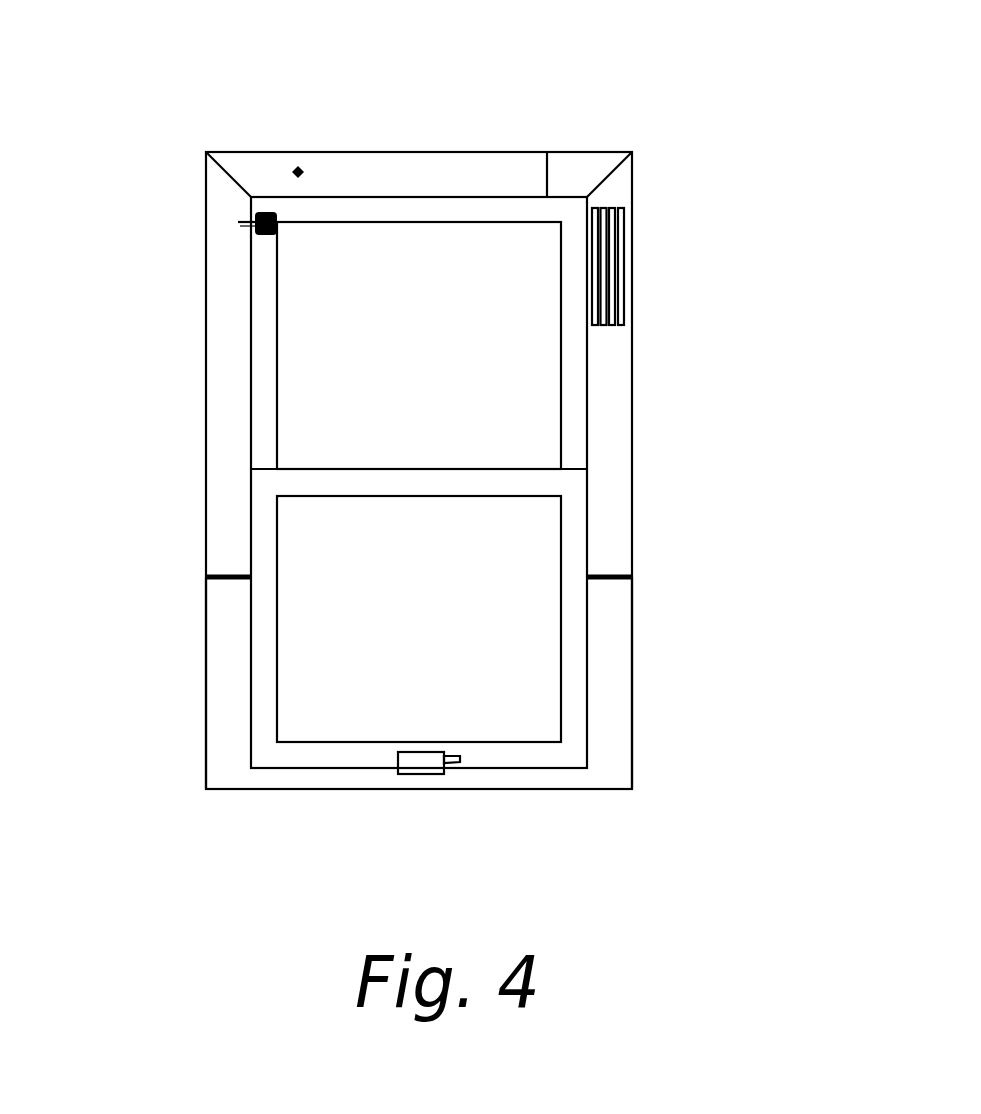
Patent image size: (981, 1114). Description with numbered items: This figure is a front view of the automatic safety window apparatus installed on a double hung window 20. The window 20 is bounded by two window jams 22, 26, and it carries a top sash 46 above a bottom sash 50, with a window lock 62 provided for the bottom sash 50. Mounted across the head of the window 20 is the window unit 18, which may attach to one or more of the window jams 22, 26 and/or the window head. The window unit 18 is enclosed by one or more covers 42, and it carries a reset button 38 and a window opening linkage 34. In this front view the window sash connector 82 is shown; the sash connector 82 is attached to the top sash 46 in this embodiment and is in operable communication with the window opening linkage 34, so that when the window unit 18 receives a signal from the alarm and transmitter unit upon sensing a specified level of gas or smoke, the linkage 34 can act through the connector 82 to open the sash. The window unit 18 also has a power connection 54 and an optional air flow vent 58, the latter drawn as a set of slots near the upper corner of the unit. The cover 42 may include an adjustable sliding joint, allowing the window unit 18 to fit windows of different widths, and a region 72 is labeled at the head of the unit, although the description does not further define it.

The window unit 18 is at (422, 395).
The window 20 is at (343, 762).
The window jam 22 is at (147, 683).
The window jam 26 is at (688, 683).
The window opening linkage 34 is at (173, 190).
The reset button 38 is at (213, 89).
The cover 42 is at (327, 482).
The top sash 46 is at (499, 345).
The bottom sash 50 is at (520, 626).
The power connection 54 is at (493, 604).
The air flow vent 58 is at (692, 242).
The window lock 62 is at (559, 830).
The header section 72 is at (522, 125).
The window sash connector 82 is at (174, 299).